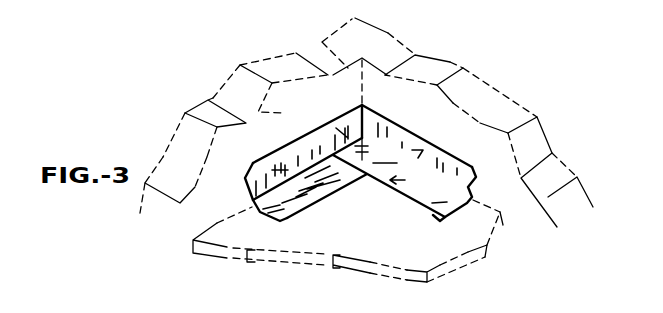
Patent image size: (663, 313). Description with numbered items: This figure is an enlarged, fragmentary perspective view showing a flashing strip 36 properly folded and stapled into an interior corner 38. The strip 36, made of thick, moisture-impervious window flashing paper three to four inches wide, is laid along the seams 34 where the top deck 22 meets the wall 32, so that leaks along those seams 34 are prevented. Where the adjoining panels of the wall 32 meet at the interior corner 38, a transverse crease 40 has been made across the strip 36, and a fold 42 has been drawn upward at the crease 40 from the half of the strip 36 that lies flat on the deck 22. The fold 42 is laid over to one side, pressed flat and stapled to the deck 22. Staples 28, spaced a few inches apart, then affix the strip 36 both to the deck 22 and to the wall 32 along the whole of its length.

The top deck 22 is at (452, 253).
The staples 28 is at (418, 180).
The wall 32 is at (208, 98).
The seams 34 is at (212, 218).
The flashing strips 36 is at (316, 131).
The interior corner 38 is at (322, 42).
The transverse crease 40 is at (360, 105).
The fold 42 is at (348, 177).